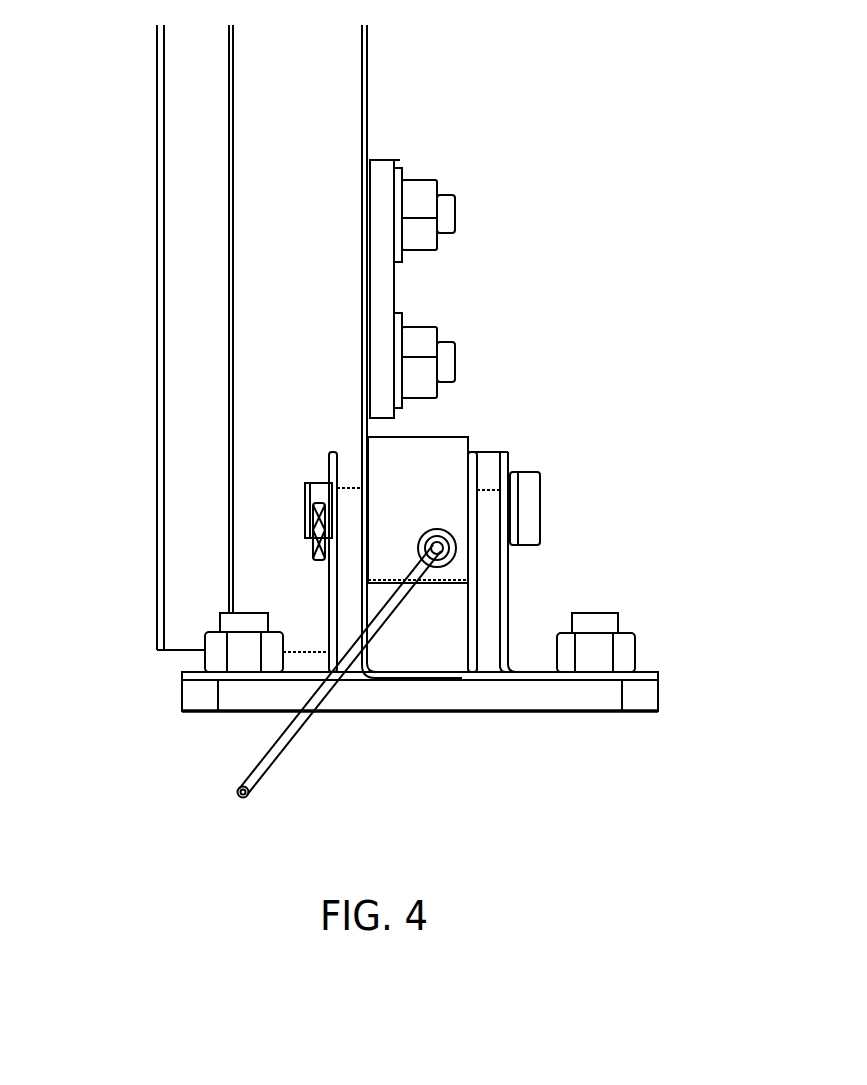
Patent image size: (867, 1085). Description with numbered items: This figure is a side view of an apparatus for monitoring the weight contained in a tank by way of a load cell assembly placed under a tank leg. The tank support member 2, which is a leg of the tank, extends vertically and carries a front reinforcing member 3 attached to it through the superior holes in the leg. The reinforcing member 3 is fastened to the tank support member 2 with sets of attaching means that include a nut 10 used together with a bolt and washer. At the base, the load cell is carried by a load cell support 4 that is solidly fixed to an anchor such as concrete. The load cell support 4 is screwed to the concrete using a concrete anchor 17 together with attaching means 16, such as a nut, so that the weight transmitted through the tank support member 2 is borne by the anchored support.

The tank support member 2 is at (152, 96).
The reinforcing member 3 is at (388, 162).
The nut 10 is at (429, 186).
The concrete anchor 17 is at (231, 619).
The attaching means 16 is at (252, 661).
The load cell support 4 is at (576, 709).